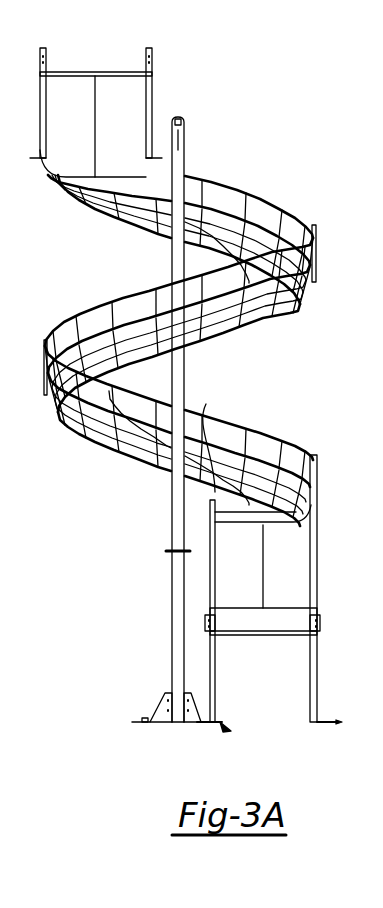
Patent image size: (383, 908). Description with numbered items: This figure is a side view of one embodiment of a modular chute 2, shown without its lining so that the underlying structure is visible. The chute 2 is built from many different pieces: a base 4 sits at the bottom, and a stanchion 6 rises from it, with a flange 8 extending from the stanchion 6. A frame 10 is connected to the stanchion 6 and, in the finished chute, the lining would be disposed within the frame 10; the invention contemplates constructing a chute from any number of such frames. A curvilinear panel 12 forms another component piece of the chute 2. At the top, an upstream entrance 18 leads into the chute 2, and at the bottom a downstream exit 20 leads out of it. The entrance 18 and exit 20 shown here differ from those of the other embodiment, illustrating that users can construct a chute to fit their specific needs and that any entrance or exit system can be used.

The modular chute 2 is at (181, 304).
The base 4 is at (137, 722).
The stanchion 6 is at (173, 257).
The flange 8 is at (192, 532).
The frame 10 is at (293, 300).
The curvilinear panel 12 is at (190, 440).
The upstream entrance 18 is at (153, 68).
The downstream exit 20 is at (322, 548).